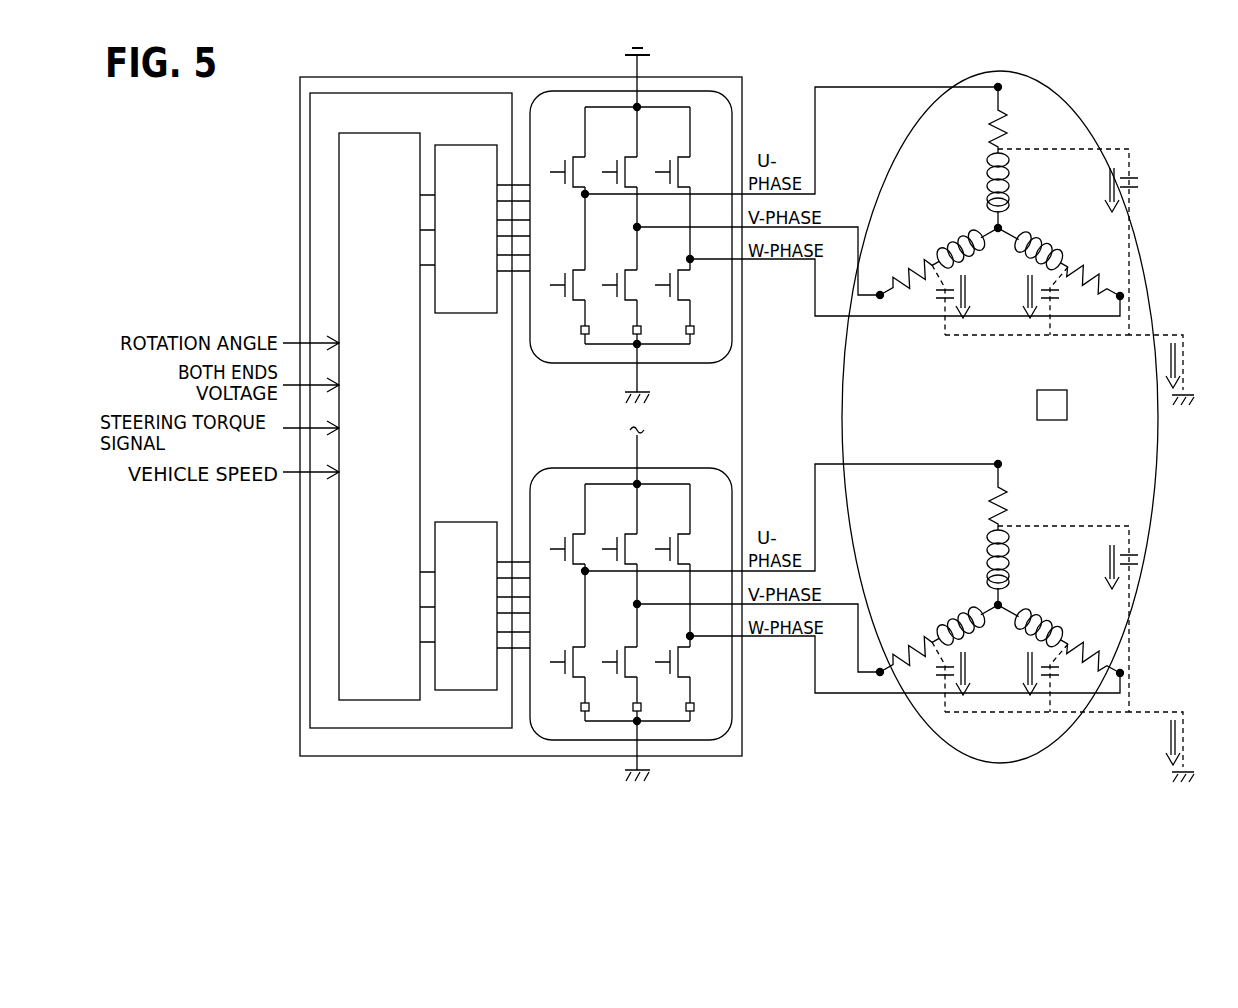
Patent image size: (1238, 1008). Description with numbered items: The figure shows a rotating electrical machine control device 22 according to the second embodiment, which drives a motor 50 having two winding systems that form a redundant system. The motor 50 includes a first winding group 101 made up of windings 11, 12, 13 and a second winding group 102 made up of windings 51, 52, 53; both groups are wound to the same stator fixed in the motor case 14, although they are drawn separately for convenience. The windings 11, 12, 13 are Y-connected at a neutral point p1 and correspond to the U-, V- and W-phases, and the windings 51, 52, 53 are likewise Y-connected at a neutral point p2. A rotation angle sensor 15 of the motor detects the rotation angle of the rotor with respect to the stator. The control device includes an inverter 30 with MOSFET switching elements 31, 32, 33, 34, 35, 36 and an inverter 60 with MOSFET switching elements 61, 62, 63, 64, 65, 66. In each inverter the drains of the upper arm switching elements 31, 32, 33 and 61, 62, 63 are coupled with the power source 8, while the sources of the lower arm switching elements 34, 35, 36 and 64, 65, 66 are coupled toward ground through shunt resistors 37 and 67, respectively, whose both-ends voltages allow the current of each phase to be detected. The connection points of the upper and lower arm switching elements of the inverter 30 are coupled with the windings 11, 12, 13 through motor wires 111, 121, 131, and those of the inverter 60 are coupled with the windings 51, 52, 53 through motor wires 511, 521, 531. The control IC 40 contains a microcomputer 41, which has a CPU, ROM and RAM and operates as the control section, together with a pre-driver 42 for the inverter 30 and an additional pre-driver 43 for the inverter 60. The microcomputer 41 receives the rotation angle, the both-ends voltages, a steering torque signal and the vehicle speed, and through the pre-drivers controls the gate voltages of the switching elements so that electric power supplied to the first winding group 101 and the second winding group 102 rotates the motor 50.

The power source 8 is at (650, 46).
The winding 11 is at (1008, 183).
The winding 12 is at (958, 238).
The winding 13 is at (1034, 257).
The motor case 14 is at (1023, 70).
The rotation angle sensor 15 is at (1067, 418).
The rotating electrical machine control device 22 is at (528, 77).
The inverter 30 is at (583, 91).
The switching element 31 is at (573, 157).
The switching element 32 is at (625, 157).
The switching element 33 is at (678, 157).
The switching element 34 is at (573, 270).
The switching element 35 is at (625, 270).
The switching element 36 is at (678, 270).
The shunt resistor 37 is at (581, 330).
The control IC 40 is at (324, 92).
The microcomputer 41 is at (374, 133).
The pre-driver 42 is at (463, 145).
The pre-driver 43 is at (461, 522).
The motor 50 is at (1111, 83).
The winding 51 is at (1008, 560).
The winding 52 is at (958, 615).
The winding 53 is at (1034, 636).
The inverter 60 is at (583, 468).
The switching element 61 is at (573, 534).
The switching element 62 is at (625, 534).
The switching element 63 is at (678, 534).
The switching element 64 is at (573, 647).
The switching element 65 is at (625, 647).
The switching element 66 is at (678, 647).
The shunt resistor 67 is at (581, 707).
The first winding group 101 is at (966, 158).
The second winding group 102 is at (966, 538).
The motor wire 111 is at (826, 87).
The motor wire 121 is at (838, 226).
The motor wire 131 is at (876, 318).
The motor wire 511 is at (823, 463).
The motor wire 521 is at (857, 603).
The motor wire 531 is at (836, 695).
The neutral point p1 is at (1000, 227).
The neutral point p2 is at (1000, 604).